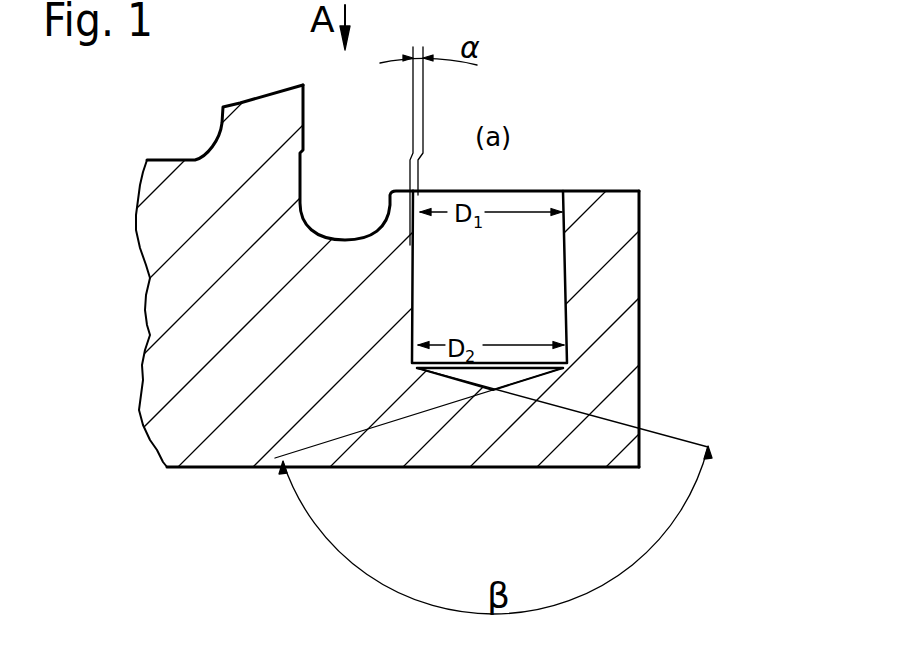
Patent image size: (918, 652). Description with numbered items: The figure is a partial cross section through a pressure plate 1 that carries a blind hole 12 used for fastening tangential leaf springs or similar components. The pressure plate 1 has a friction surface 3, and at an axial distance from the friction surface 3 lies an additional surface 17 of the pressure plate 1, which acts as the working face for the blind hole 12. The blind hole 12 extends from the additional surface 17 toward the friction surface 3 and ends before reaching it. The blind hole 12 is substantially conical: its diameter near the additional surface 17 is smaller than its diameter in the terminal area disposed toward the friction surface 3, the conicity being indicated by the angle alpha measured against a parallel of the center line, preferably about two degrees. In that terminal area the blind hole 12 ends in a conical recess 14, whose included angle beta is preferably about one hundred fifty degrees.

The pressure plate 1 is at (622, 255).
The friction surface 3 is at (190, 475).
The blind hole 12 is at (556, 226).
The conical recess 14 is at (510, 376).
The additional surface 17 is at (615, 185).